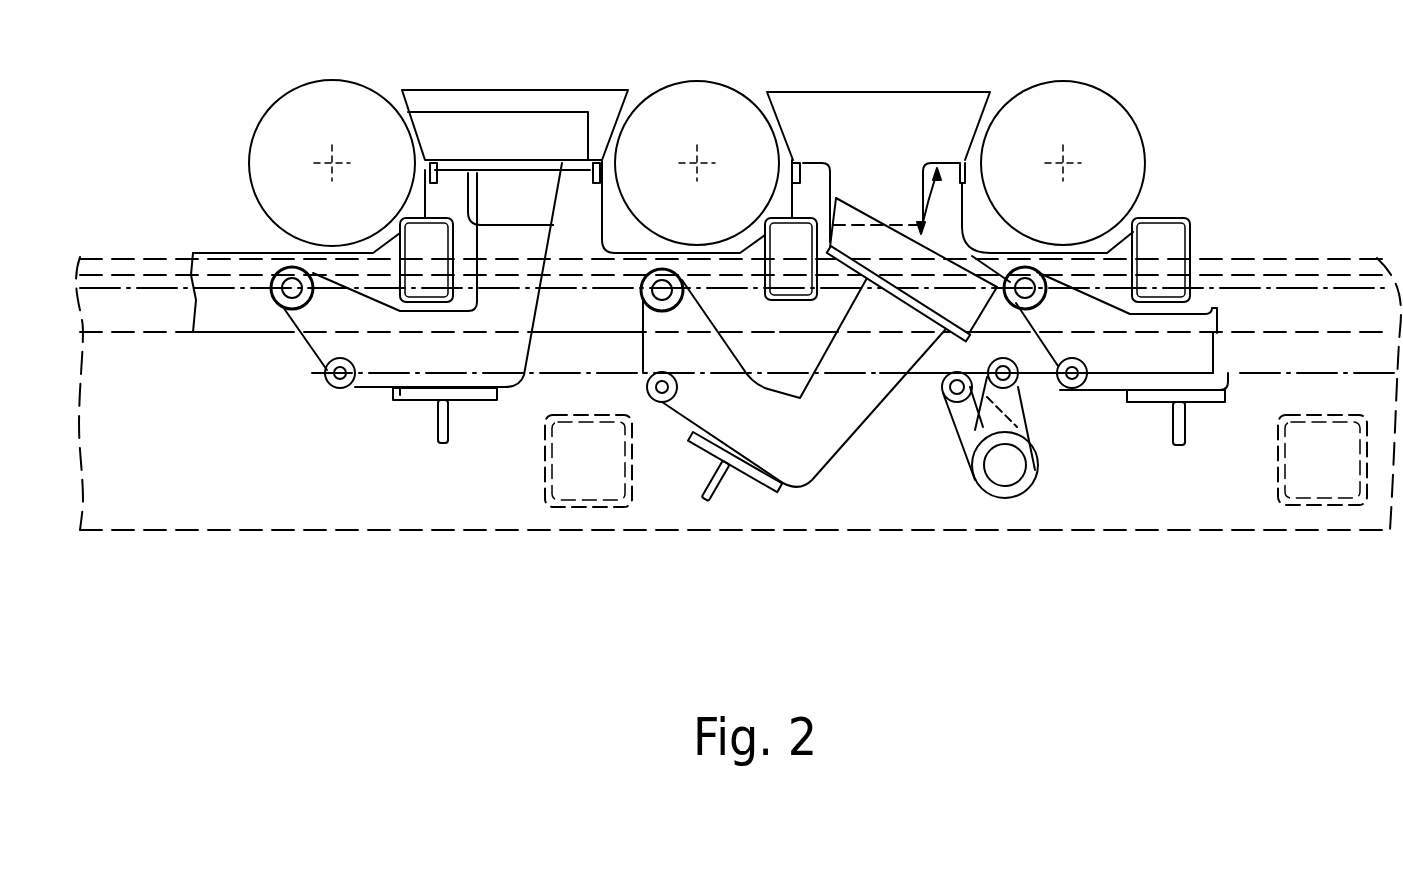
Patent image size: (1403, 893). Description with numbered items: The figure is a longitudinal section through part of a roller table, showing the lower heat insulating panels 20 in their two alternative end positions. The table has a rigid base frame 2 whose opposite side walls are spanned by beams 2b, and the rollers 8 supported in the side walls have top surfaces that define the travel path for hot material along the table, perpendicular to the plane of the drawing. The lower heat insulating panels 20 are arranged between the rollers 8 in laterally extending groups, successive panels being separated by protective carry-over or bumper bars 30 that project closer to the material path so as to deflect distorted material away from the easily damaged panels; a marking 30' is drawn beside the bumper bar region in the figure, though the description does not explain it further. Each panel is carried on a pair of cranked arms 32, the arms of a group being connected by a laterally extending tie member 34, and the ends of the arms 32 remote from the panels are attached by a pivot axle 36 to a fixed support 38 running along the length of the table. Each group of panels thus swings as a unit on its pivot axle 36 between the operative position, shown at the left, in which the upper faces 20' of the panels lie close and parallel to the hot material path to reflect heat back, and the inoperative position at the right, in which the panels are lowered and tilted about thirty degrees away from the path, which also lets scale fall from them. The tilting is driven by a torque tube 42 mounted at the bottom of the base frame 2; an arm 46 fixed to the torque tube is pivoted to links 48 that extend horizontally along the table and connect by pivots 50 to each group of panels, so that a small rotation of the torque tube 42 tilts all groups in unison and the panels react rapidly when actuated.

The base frame 2 is at (355, 508).
The beams 2b is at (1167, 218).
The rollers 8 is at (332, 88).
The lower heat insulating panels 20 is at (515, 177).
The upper faces 20' is at (511, 96).
The bumper bars 30 is at (888, 163).
The hopper adjustment direction 30' is at (943, 201).
The cranked arms 32 is at (408, 353).
The tie member 34 is at (449, 421).
The pivot axle 36 is at (273, 302).
The fixed support 38 is at (212, 323).
The torque tube 42 is at (995, 490).
The arm 46 is at (1020, 413).
The links 48 is at (552, 373).
The pivots 50 is at (340, 388).